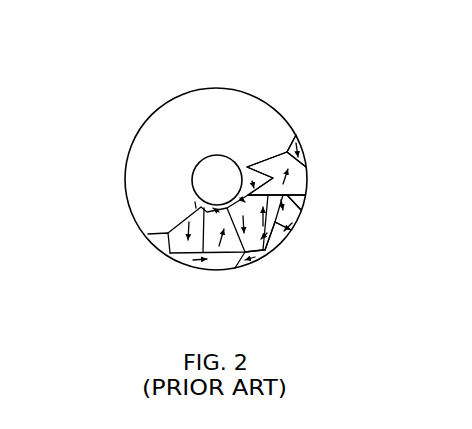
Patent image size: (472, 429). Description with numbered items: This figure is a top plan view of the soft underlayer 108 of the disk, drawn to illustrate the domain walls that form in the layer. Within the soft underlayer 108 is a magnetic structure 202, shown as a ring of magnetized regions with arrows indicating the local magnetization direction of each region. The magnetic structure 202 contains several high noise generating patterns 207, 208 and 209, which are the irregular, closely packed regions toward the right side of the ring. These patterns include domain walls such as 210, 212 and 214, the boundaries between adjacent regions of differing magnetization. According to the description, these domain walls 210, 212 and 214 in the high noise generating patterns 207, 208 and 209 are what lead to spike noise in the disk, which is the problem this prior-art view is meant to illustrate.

The soft underlayer 108 is at (146, 61).
The magnetic structure 202 is at (153, 244).
The high noise generating pattern 207 is at (307, 197).
The high noise generating pattern 208 is at (276, 224).
The high noise generating pattern 209 is at (263, 250).
The domain wall 210 is at (304, 186).
The domain wall 212 is at (277, 238).
The domain wall 214 is at (292, 211).